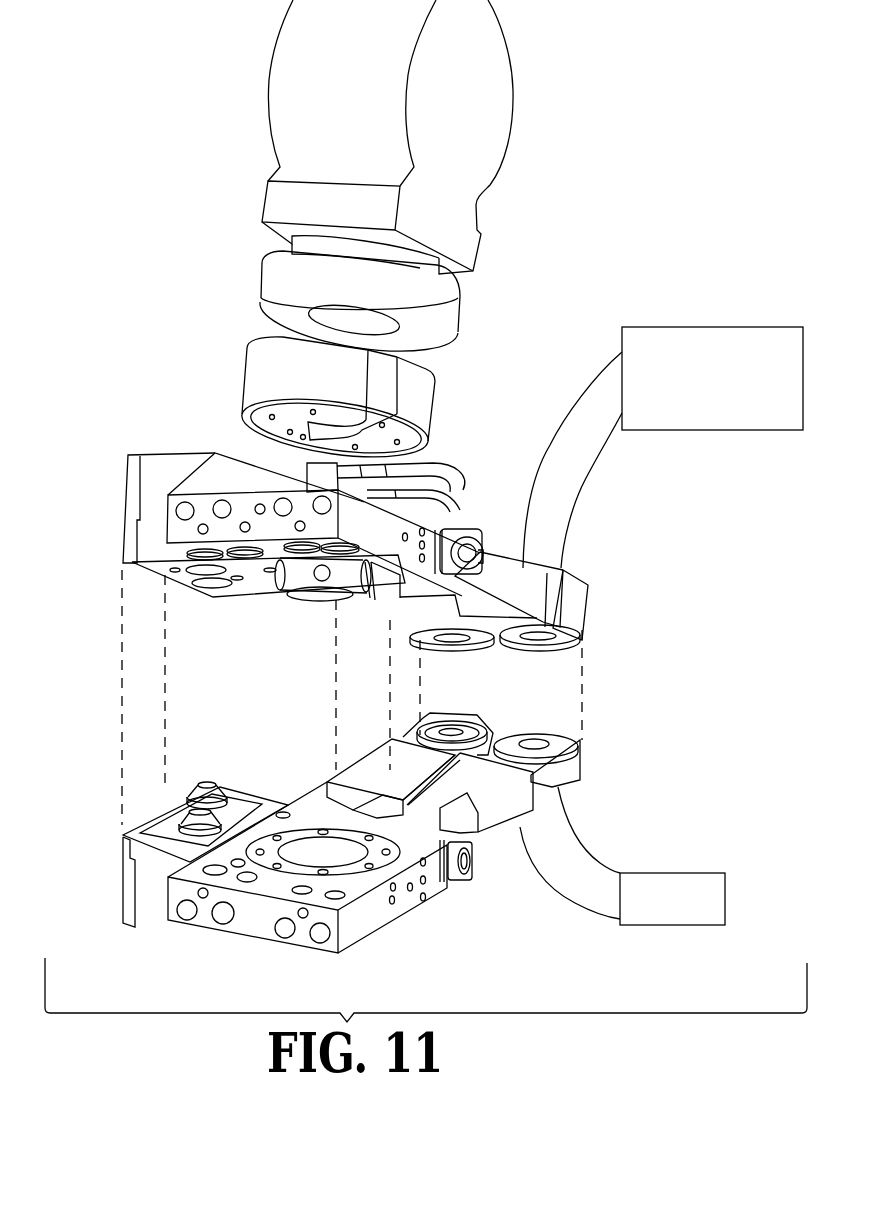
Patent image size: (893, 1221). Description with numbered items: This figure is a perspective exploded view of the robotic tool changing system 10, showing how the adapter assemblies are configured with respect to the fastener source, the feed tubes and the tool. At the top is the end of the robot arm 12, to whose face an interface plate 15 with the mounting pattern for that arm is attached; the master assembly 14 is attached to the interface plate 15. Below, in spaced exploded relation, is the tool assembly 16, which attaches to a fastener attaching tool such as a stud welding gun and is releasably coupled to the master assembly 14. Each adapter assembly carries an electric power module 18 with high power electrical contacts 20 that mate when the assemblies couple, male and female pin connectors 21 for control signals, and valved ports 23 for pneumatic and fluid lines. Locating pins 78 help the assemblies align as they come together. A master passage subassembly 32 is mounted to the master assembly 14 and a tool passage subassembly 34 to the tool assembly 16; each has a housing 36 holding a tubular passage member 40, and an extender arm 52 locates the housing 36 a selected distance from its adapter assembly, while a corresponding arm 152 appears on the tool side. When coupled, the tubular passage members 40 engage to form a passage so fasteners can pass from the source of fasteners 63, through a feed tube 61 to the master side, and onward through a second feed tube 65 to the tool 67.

The robotic tool changing system 10 is at (556, 220).
The robot arm 12 is at (498, 86).
The master assembly 14 is at (252, 500).
The interface plate 15 is at (432, 386).
The tool assembly 16 is at (355, 930).
The electric power module 18 is at (162, 463).
The high power electrical contacts 20 is at (205, 575).
The male and female pin connectors 21 is at (480, 540).
The valved ports 23 is at (180, 512).
The master passage subassembly 32 is at (584, 577).
The tool passage subassembly 34 is at (482, 716).
The housing 36 is at (586, 608).
The tubular passage member 40 is at (547, 640).
The extender arm 52 is at (505, 565).
The fastener feed conduit 61 is at (590, 392).
The source of fasteners 63 is at (712, 327).
The tool conduit 65 is at (605, 866).
The tool 67 is at (692, 932).
The locating pins 78 is at (365, 606).
The slide plate 152 is at (355, 778).